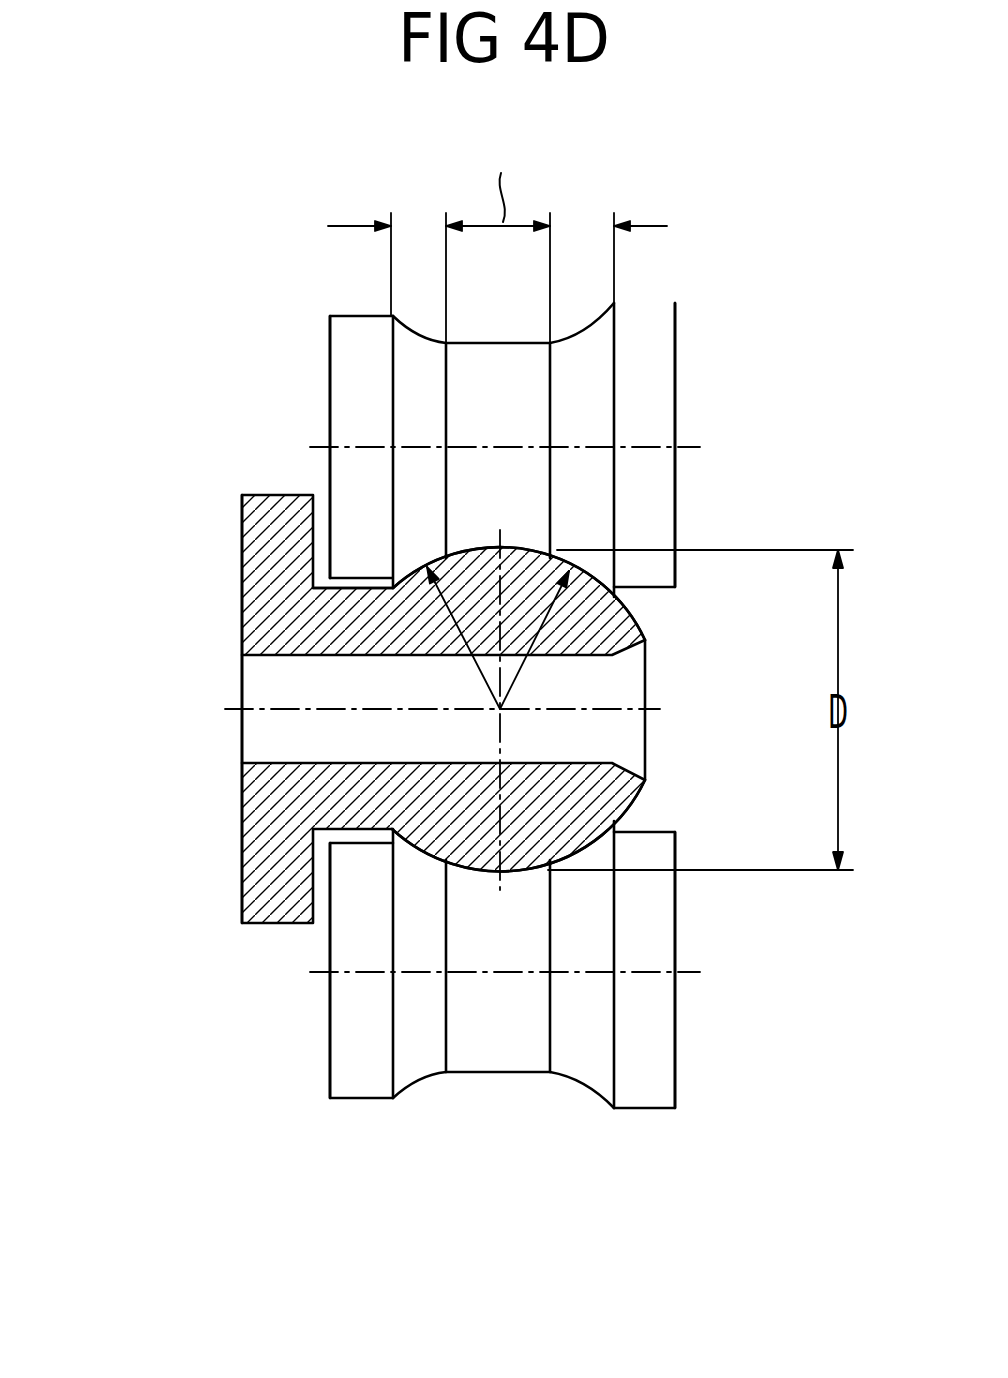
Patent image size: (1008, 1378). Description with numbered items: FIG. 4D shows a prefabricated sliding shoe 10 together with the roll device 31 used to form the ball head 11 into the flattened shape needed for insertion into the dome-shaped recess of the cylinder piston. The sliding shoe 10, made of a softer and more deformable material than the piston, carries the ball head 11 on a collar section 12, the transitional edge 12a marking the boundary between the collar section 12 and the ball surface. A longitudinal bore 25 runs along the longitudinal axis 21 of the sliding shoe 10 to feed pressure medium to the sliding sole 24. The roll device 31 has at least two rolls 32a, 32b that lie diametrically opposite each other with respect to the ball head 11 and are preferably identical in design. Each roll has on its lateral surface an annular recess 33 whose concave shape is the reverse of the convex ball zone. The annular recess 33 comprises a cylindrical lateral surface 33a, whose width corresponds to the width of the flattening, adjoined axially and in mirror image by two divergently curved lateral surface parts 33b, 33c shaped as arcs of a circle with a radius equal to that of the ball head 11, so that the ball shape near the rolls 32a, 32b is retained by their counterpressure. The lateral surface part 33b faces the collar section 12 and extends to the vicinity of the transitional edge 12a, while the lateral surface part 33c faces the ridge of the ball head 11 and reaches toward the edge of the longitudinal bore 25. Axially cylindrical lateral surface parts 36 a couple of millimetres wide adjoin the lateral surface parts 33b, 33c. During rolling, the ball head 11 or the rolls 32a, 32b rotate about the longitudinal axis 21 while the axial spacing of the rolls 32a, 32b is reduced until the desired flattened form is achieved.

The sliding shoe 10 is at (243, 537).
The ball head 11 is at (634, 620).
The collar section 12 is at (337, 625).
The transitional edge 12a is at (393, 590).
The longitudinal axis 21 is at (288, 711).
The sliding sole 24 is at (243, 862).
The longitudinal bore 25 is at (282, 658).
The roll device 31 is at (514, 710).
The roll 32a is at (675, 303).
The roll 32b is at (677, 832).
The annular recess 33 is at (494, 679).
The cylindrical lateral surface 33a is at (503, 347).
The lateral surface part 33b is at (417, 227).
The lateral surface part 33c is at (582, 227).
The axially cylindrical lateral surface parts 36 is at (330, 378).